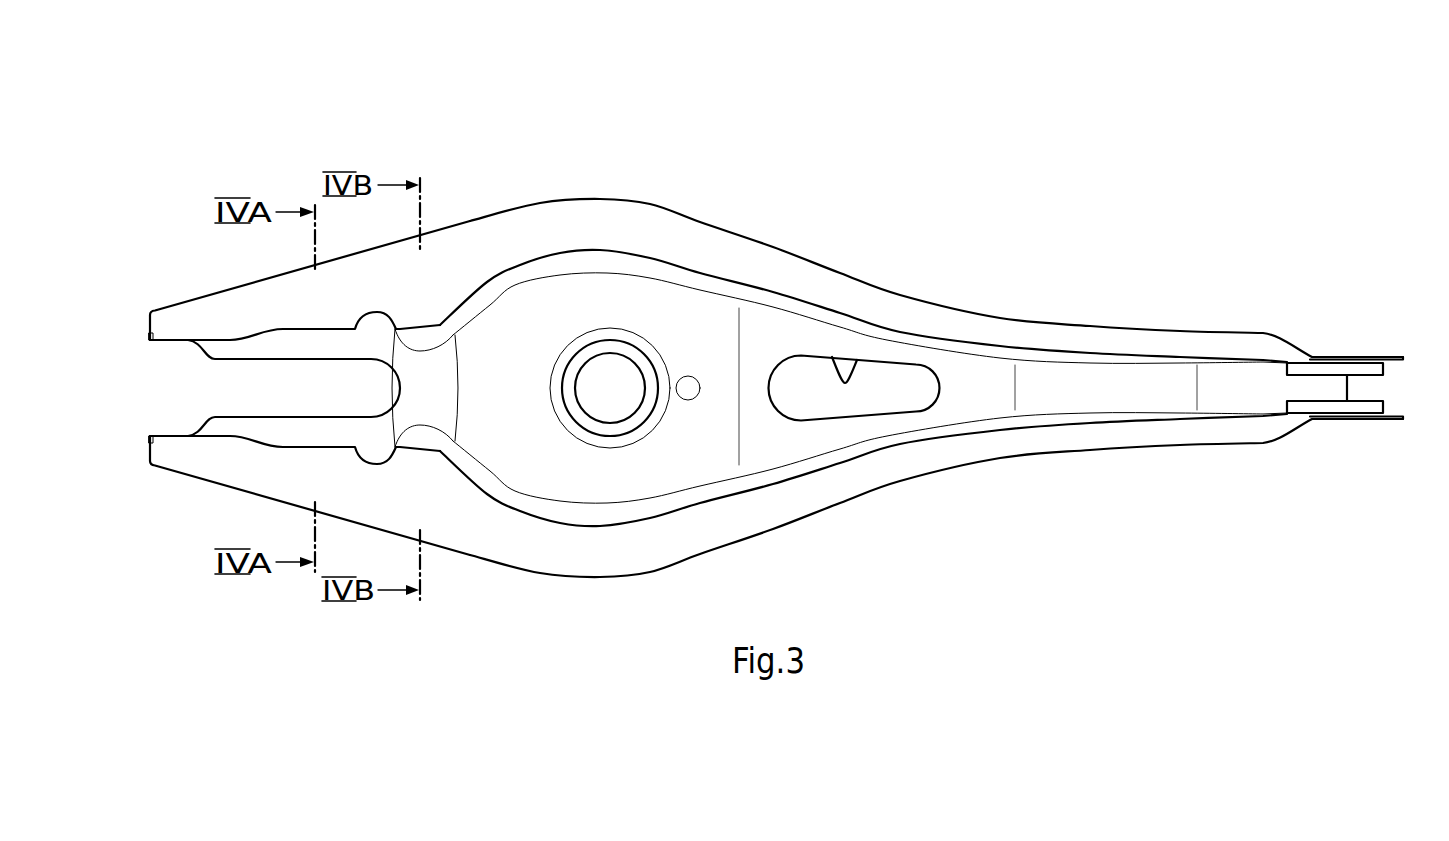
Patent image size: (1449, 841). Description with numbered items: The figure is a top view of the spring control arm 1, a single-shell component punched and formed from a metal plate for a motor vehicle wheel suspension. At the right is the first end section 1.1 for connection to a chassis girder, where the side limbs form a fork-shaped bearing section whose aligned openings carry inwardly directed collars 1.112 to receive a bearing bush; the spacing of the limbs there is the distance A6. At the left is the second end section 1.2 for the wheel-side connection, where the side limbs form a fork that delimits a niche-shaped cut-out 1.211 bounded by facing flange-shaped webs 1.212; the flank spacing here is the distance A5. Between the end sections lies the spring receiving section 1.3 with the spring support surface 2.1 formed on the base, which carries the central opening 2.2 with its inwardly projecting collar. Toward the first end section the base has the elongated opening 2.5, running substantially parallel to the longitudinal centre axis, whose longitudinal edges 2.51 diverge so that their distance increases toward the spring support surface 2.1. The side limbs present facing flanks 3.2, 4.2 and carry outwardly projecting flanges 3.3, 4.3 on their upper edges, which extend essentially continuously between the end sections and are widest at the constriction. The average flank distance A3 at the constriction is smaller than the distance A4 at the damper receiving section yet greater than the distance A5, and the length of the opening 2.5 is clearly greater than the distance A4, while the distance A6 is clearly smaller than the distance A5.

The spring control arm 1 is at (857, 120).
The first end section 1.1 is at (1393, 357).
The collars 1.112 is at (1336, 368).
The second end section 1.2 is at (168, 325).
The niche-shaped cut-out 1.211 is at (230, 392).
The flange-shaped webs 1.212 is at (328, 430).
The spring receiving section 1.3 is at (593, 483).
The spring support surface 2.1 is at (667, 308).
The opening 2.2 is at (610, 386).
The elongated opening 2.5 is at (888, 390).
The longitudinal edges 2.51 is at (853, 418).
The flank 3.2 is at (508, 283).
The flange 3.3 is at (1013, 335).
The flank 4.2 is at (508, 497).
The flange 4.3 is at (1016, 440).
The average distance of the flanks at the constriction A3 is at (420, 354).
The distance of the flanks at the damper receiving section A4 is at (298, 340).
The distance of the flanks at the second end section A5 is at (168, 352).
The distance of the side limbs on the fork-shaped bearing section A6 is at (1262, 372).